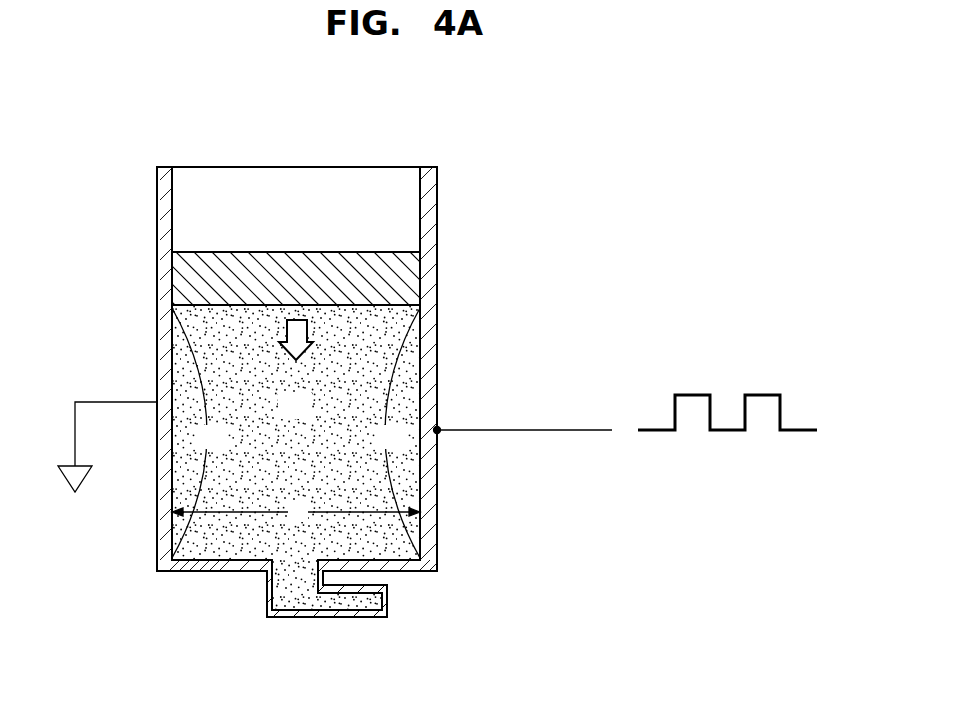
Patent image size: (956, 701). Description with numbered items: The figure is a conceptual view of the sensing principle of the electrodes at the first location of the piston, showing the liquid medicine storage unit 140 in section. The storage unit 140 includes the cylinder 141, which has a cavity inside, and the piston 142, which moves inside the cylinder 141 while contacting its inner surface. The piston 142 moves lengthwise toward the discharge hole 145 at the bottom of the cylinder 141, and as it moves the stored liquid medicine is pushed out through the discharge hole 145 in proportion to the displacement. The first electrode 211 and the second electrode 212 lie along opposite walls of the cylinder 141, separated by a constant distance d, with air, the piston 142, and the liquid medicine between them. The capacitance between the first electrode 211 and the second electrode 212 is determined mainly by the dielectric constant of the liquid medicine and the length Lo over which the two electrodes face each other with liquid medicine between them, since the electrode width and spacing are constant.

The liquid medicine storage unit 140 is at (377, 167).
The cylinder 141 is at (212, 200).
The piston 142 is at (403, 281).
The discharge hole 145 is at (357, 600).
The first electrode 211 is at (157, 222).
The second electrode 212 is at (437, 224).